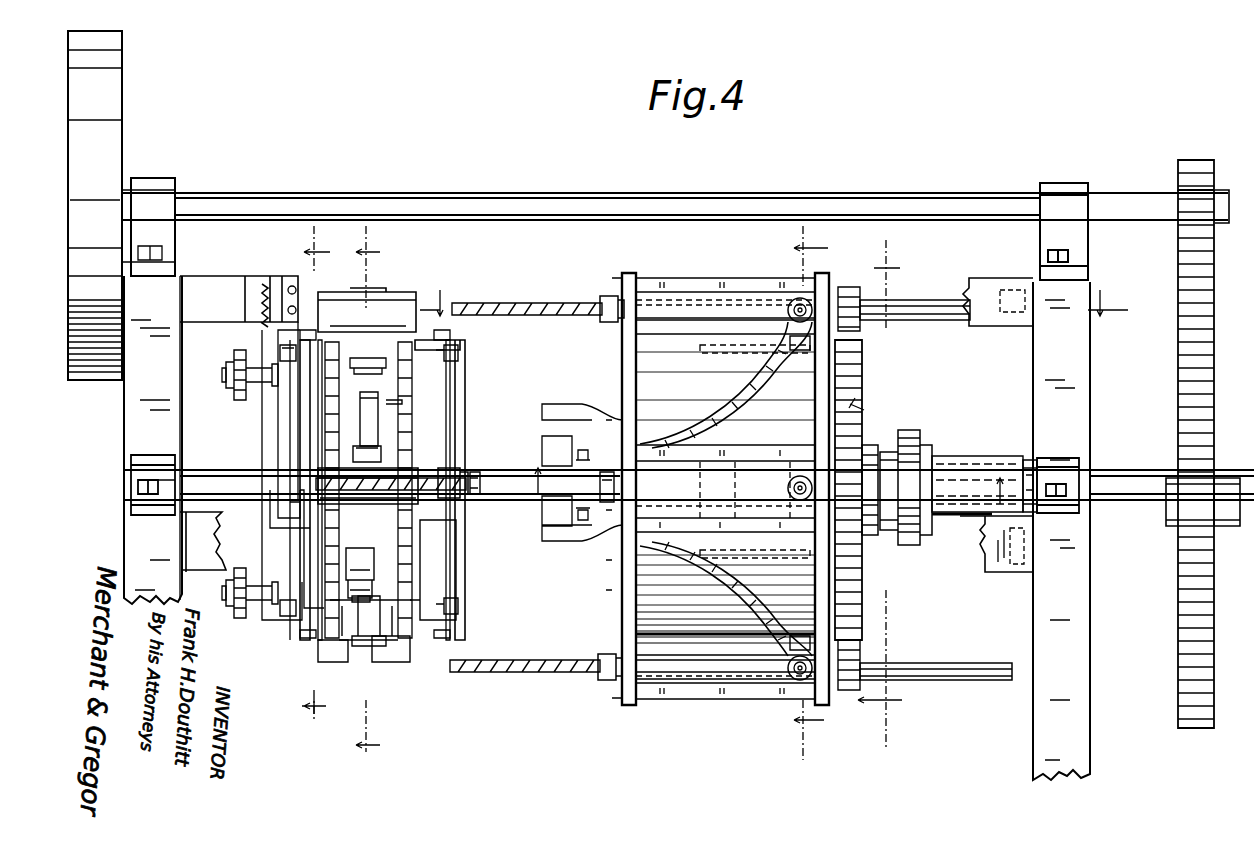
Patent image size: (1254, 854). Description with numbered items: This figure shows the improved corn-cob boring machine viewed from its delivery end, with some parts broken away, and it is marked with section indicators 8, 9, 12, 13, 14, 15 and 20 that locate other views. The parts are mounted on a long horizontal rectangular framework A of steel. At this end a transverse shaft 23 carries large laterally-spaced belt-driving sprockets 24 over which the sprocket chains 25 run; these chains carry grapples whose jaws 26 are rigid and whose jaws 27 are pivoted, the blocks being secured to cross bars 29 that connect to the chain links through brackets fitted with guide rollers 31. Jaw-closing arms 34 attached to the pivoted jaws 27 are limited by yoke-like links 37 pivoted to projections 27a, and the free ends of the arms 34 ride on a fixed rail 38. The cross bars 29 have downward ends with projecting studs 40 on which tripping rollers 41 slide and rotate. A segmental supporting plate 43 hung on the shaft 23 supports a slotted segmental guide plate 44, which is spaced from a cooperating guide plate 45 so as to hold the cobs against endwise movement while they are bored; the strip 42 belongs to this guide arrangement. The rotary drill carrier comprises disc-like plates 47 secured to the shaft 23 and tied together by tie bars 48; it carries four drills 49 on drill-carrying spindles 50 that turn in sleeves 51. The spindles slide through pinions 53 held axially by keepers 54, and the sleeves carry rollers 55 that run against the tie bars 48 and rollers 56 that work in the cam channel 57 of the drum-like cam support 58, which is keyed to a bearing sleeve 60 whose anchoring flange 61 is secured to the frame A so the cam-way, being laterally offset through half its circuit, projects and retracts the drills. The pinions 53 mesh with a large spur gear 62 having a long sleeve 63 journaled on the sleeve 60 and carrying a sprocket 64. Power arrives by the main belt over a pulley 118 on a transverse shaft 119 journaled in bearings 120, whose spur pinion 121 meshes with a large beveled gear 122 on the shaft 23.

The pulley 118 is at (120, 158).
The transverse shaft 119 is at (292, 200).
The bearings 120 is at (1014, 260).
The spur pinion 121 is at (1174, 184).
The large beveled gear 122 is at (1180, 392).
The framework A is at (124, 442).
The cross bars 29 is at (264, 334).
The projecting studs 40 is at (226, 378).
The tripping rollers 41 is at (232, 386).
The segmental supporting plate 43 is at (456, 424).
The segmental guide plate 45 is at (288, 538).
The belt-driving sprockets 24 is at (398, 576).
The sprocket chains 25 is at (394, 544).
The jaws 26 is at (406, 290).
The fixed rail 38 is at (370, 368).
The jaw-closing arms 34 is at (372, 402).
The jaws 27 is at (385, 460).
The projections 27a is at (362, 682).
The yoke-like links 37 is at (365, 651).
The guide strip 42 is at (414, 398).
The segmental guide plate 44 is at (456, 542).
The guide rollers 31 is at (284, 372).
The transverse shaft 23 is at (194, 476).
The screw shaft 15 is at (462, 306).
The drills 49 is at (538, 302).
The drill-carrying spindles 50 is at (460, 510).
The disc-like plates 47 is at (624, 366).
The tie bars 48 is at (756, 272).
The sleeves 51 is at (700, 330).
The rollers 55 is at (764, 326).
The rollers 56 is at (738, 356).
The cam channel 57 is at (780, 546).
The drum-like cam support 58 is at (630, 586).
The keepers 54 is at (834, 290).
The pinions 53 is at (862, 302).
The large spur gear 62 is at (854, 610).
The sprocket 64 is at (938, 454).
The long sleeve 63 is at (970, 482).
The bearing sleeve 60 is at (1030, 466).
The anchoring flange 61 is at (1026, 560).
The section line 14 is at (321, 476).
The section line 20 is at (372, 505).
The section line 12 is at (812, 491).
The section line 8 is at (880, 495).
The section line 9 is at (774, 299).
The section line 13 is at (767, 472).